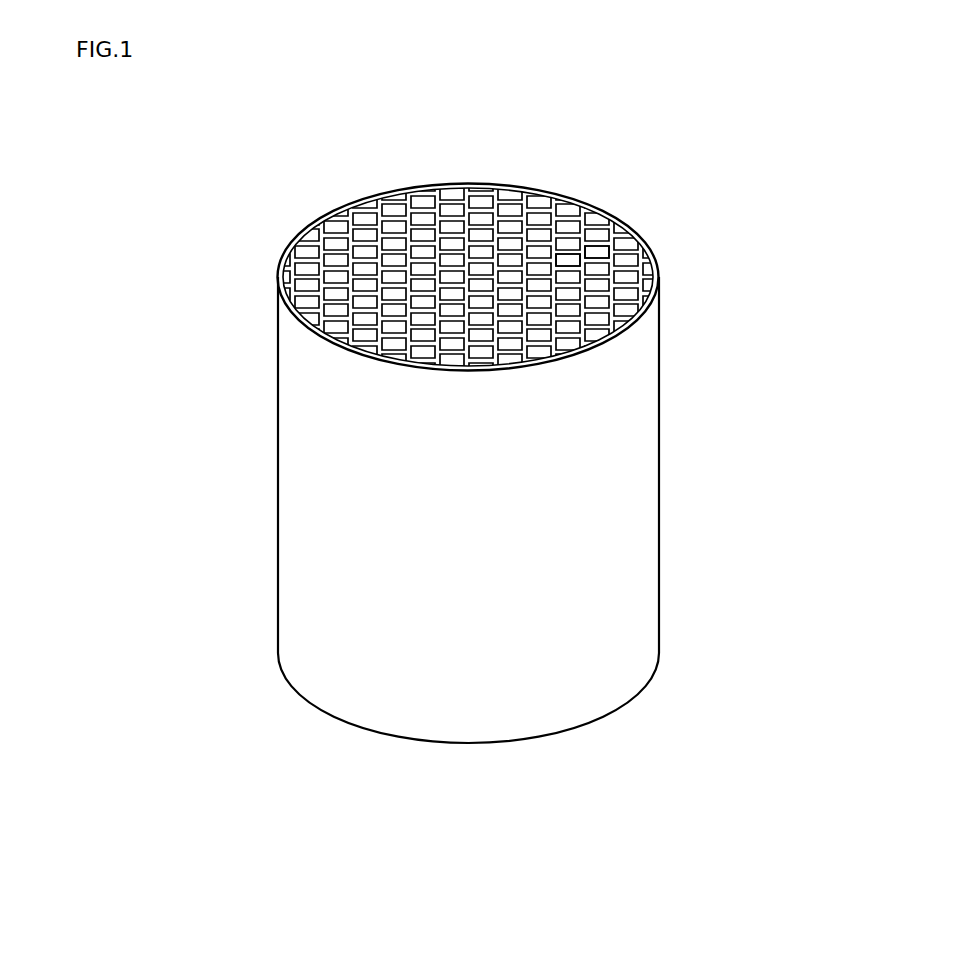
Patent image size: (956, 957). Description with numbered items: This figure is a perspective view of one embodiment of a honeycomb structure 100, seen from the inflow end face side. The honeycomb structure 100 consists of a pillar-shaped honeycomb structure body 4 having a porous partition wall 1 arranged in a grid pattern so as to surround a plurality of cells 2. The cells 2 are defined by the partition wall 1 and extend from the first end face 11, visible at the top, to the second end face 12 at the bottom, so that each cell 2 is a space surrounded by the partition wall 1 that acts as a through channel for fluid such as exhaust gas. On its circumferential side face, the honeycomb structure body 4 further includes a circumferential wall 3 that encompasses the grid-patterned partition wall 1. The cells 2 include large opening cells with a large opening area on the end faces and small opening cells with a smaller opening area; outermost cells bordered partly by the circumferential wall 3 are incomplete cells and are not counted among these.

The honeycomb structure 100 is at (793, 132).
The partition wall 1 is at (570, 210).
The cells 2 is at (560, 255).
The circumferential wall 3 is at (628, 408).
The honeycomb structure body 4 is at (673, 311).
The first end face 11 is at (353, 199).
The second end face 12 is at (303, 706).